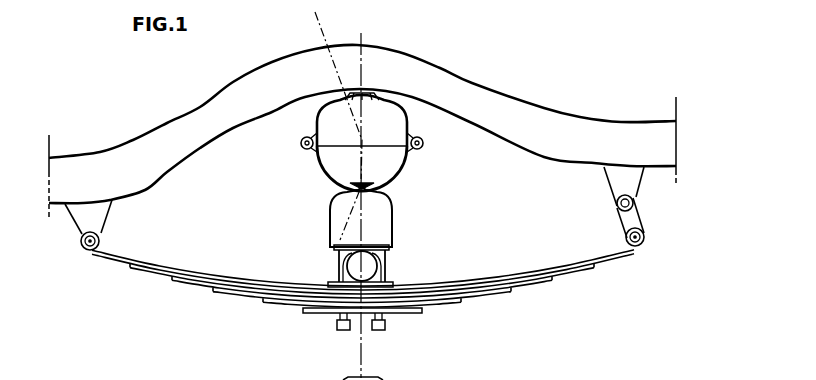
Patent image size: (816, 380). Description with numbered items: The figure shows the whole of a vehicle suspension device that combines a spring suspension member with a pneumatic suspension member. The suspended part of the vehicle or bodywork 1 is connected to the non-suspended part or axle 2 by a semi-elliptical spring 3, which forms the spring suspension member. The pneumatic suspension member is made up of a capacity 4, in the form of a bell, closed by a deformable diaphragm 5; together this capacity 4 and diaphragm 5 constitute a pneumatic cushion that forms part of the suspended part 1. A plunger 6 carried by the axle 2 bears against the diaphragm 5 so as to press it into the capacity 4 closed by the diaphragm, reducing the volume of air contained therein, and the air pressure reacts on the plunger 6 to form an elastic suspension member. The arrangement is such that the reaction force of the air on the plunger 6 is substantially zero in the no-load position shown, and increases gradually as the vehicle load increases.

The suspended part of the vehicle 1 is at (487, 108).
The non-suspended part 2 is at (369, 267).
The semi-elliptical spring 3 is at (474, 303).
The capacity 4 is at (402, 123).
The deformable diaphragm 5 is at (400, 172).
The plunger 6 is at (382, 215).